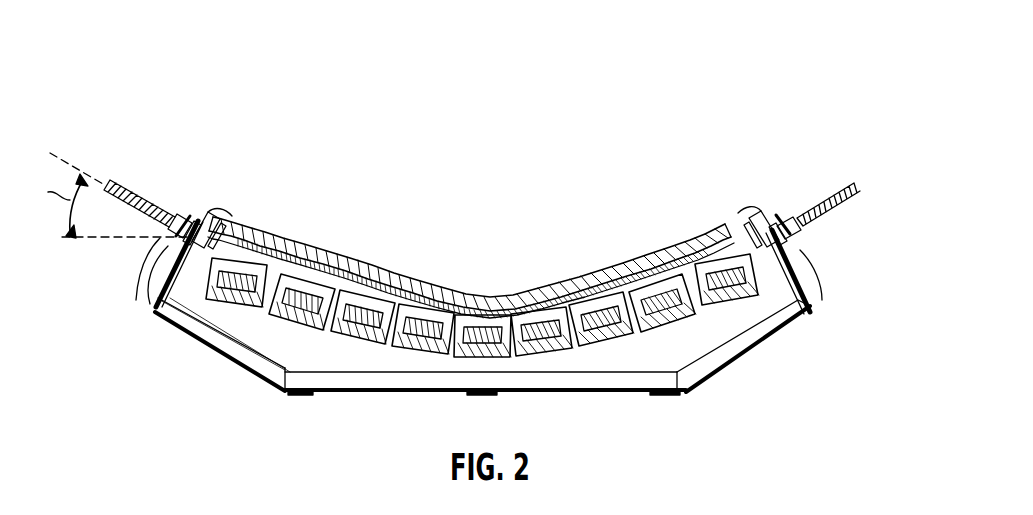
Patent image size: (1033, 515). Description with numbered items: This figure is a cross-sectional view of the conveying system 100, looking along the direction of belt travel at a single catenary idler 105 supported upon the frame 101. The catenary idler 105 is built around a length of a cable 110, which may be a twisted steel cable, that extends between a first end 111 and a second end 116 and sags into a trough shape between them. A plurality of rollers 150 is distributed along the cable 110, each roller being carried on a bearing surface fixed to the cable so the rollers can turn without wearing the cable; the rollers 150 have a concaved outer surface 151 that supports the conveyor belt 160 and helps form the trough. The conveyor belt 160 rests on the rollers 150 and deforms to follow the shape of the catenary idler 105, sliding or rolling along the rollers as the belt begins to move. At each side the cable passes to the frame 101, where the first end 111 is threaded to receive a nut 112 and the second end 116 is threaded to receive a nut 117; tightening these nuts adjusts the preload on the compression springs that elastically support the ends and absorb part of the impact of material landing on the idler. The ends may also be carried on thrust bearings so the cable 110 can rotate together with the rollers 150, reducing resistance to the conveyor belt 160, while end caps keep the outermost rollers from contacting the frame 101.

The conveying system 100 is at (132, 47).
The frame 101 is at (803, 290).
The catenary idler 105 is at (436, 208).
The cable 110 is at (305, 305).
The first end 111 is at (122, 190).
The nut 112 is at (152, 222).
The second end 116 is at (855, 195).
The nut 117 is at (813, 198).
The roller 150 is at (247, 297).
The concaved outer surface 151 is at (518, 363).
The conveyor belt 160 is at (530, 296).